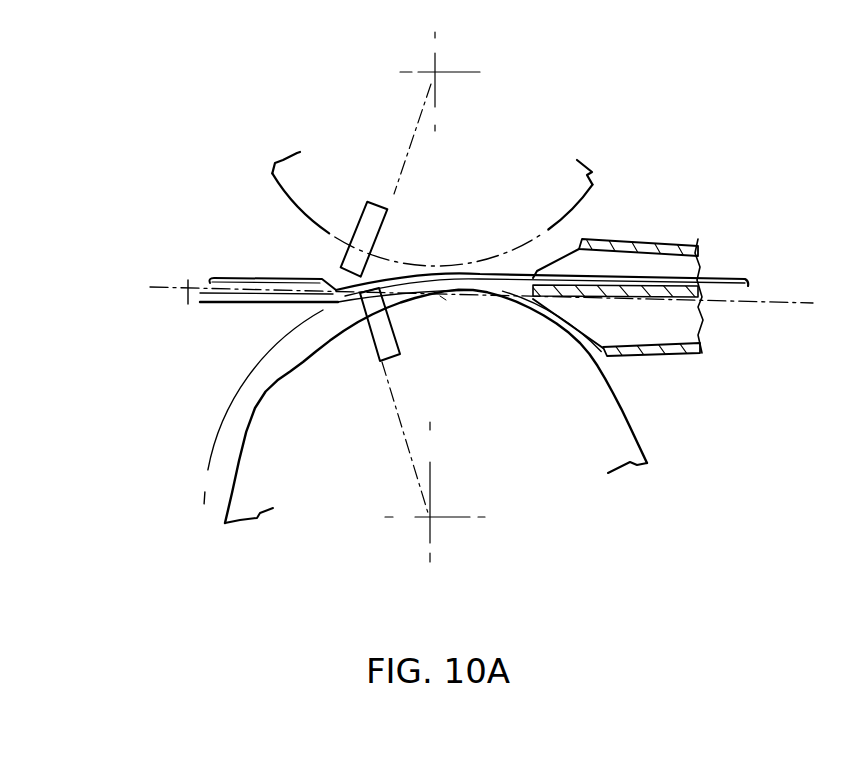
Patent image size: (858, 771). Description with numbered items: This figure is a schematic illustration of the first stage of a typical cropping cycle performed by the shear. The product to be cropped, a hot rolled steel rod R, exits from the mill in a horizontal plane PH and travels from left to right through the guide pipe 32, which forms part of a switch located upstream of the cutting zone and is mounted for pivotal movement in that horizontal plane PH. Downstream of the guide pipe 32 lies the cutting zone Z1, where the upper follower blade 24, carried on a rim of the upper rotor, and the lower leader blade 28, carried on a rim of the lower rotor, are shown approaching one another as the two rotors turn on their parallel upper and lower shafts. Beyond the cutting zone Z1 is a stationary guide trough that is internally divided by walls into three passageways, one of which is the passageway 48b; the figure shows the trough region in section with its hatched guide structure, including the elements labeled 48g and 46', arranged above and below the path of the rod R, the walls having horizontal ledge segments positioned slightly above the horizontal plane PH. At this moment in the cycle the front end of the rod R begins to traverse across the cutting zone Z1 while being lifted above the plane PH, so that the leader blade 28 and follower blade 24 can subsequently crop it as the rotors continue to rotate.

The hot rolled steel rod R is at (197, 280).
The guide pipe 32 is at (251, 279).
The upper follower blade 24 is at (372, 231).
The lower leader blade 28 is at (388, 338).
The cutting zone Z1 is at (447, 303).
The upper guide plate 48g is at (600, 258).
The guide block 46' is at (616, 296).
The passageway 48b is at (678, 333).
The horizontal plane PH is at (783, 302).